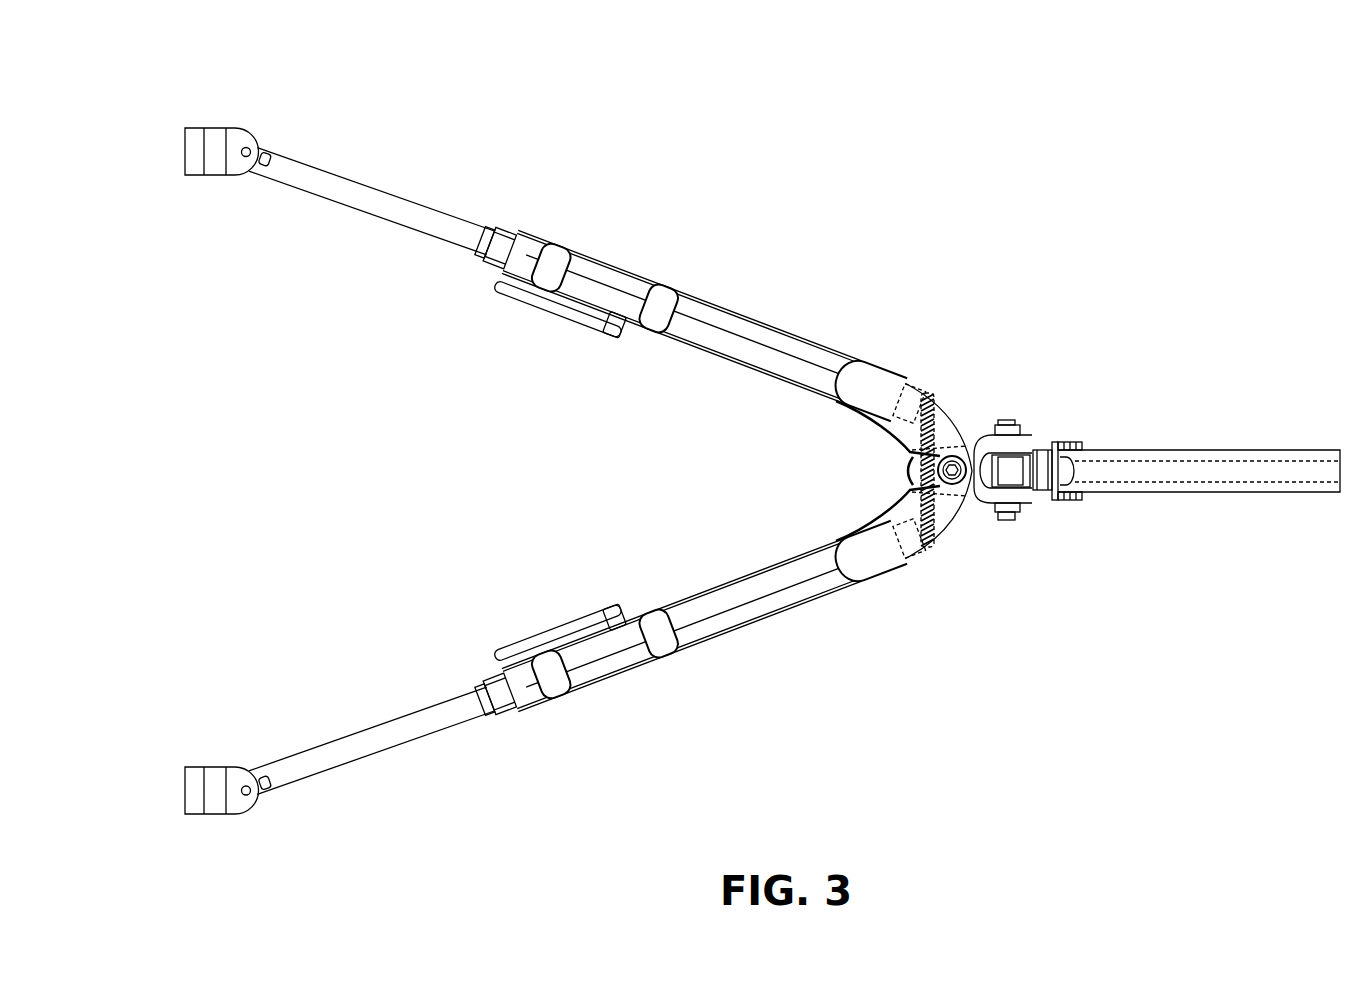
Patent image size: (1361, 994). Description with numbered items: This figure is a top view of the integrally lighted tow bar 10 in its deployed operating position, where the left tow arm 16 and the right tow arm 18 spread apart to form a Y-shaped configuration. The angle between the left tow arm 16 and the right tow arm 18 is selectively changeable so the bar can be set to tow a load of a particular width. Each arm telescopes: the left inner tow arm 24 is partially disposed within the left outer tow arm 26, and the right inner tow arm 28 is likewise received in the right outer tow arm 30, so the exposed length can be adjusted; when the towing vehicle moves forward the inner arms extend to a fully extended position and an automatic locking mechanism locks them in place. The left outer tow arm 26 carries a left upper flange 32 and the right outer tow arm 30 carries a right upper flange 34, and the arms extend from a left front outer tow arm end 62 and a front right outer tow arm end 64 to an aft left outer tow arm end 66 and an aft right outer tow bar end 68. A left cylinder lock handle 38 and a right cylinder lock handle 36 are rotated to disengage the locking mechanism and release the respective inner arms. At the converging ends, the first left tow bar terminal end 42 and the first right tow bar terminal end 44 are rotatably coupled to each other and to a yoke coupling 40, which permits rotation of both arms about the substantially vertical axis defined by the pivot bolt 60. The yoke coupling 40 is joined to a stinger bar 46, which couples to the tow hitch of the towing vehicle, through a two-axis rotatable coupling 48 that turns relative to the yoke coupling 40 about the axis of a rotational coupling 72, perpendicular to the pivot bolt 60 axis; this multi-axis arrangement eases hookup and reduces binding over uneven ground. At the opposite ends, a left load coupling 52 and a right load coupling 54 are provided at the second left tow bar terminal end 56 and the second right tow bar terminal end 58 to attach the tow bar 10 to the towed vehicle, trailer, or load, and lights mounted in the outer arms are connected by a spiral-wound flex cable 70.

The integrally lighted tow bar 10 is at (806, 172).
The left tow arm 16 is at (722, 657).
The right tow arm 18 is at (822, 293).
The left inner tow arm 24 is at (372, 742).
The left outer tow arm 26 is at (716, 585).
The right inner tow arm 28 is at (380, 206).
The right outer tow arm 30 is at (740, 345).
The left upper flange 32 is at (848, 566).
The right upper flange 34 is at (880, 372).
The right cylinder lock handle 36 is at (568, 312).
The left cylinder lock handle 38 is at (546, 637).
The yoke coupling 40 is at (990, 504).
The first left tow bar terminal end 42 is at (882, 592).
The first right tow bar terminal end 44 is at (980, 403).
The stinger bar 46 is at (1186, 470).
The two-axis rotatable coupling 48 is at (1042, 450).
The left load coupling 52 is at (198, 792).
The right load coupling 54 is at (196, 152).
The second left tow bar terminal end 56 is at (222, 822).
The second right tow bar terminal end 58 is at (236, 100).
The pivot bolt 60 is at (960, 486).
The left front outer tow arm end 62 is at (918, 597).
The front right outer tow arm end 64 is at (972, 347).
The aft left outer tow arm end 66 is at (494, 742).
The aft right outer tow bar end 68 is at (516, 205).
The spiral-wound flex cable 70 is at (966, 458).
The rotational coupling 72 is at (1012, 522).